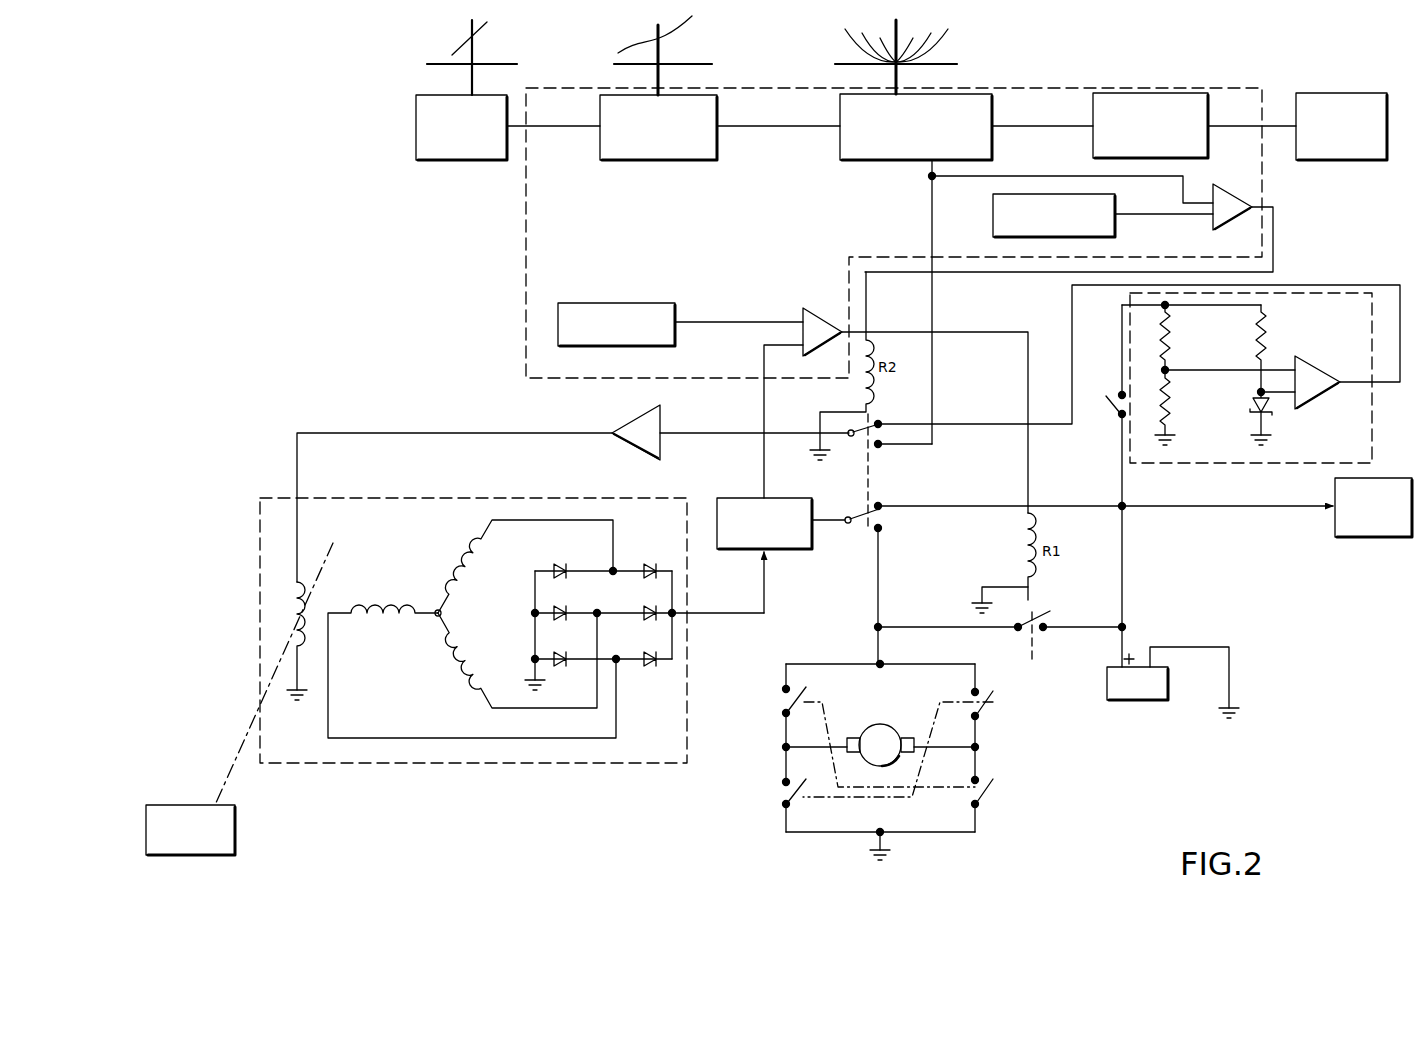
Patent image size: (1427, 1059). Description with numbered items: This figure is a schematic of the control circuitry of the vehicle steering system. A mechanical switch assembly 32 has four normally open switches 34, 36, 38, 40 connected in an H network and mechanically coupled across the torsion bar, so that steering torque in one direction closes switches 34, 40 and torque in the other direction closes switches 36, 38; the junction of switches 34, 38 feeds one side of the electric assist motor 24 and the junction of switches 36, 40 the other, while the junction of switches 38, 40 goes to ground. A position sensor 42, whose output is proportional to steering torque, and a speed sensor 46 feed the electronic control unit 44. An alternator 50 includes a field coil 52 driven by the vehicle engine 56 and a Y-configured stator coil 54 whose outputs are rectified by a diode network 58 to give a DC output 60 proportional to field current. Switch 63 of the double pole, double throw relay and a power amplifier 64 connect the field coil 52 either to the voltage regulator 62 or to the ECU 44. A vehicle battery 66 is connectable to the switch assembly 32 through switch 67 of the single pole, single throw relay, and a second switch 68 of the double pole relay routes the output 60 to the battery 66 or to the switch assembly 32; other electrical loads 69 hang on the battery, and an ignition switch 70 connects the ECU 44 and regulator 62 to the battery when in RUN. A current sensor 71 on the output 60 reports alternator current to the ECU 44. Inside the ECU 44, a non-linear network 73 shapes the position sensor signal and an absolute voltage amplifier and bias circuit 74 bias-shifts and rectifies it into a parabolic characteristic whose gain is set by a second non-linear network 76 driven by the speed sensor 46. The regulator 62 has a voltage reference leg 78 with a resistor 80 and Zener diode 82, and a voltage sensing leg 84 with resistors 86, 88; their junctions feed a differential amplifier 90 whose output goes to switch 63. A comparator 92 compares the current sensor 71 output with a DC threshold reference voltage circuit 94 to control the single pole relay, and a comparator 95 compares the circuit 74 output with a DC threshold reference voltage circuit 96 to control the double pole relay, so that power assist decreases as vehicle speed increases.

The electric assist motor 24 is at (900, 724).
The mechanical switch assembly 32 is at (914, 761).
The switch 34 is at (783, 704).
The switch 36 is at (988, 704).
The switch 38 is at (785, 795).
The switch 40 is at (984, 796).
The position sensor 42 is at (450, 165).
The electronic control unit 44 is at (517, 291).
The speed sensor 46 is at (1330, 160).
The alternator 50 is at (416, 676).
The field coil 52 is at (312, 600).
The stator coil 54 is at (436, 622).
The vehicle engine 56 is at (228, 802).
The diode network 58 is at (650, 553).
The output 60 is at (680, 612).
The voltage regulator 62 is at (1260, 358).
The switch 63 is at (882, 452).
The power amplifier 64 is at (636, 442).
The vehicle battery 66 is at (1143, 702).
The switch 67 is at (1056, 620).
The second switch 68 is at (868, 540).
The other electrical loads 69 is at (1366, 538).
The ignition switch 70 is at (1112, 416).
The current sensor 71 is at (728, 497).
The non-linear network 73 is at (632, 162).
The absolute voltage amplifier and bias circuit 74 is at (878, 161).
The non-linear network 76 is at (1196, 160).
The voltage reference leg 78 is at (1248, 395).
The resistor 80 is at (1252, 340).
The Zener diode 82 is at (1272, 415).
The voltage sensing leg 84 is at (1178, 383).
The resistor 86 is at (1172, 350).
The resistor 88 is at (1160, 395).
The differential amplifier 90 is at (1322, 372).
The comparator 92 is at (825, 318).
The DC threshold reference voltage circuit 94 is at (675, 305).
The comparator 95 is at (1228, 226).
The DC threshold reference voltage circuit 96 is at (1120, 230).